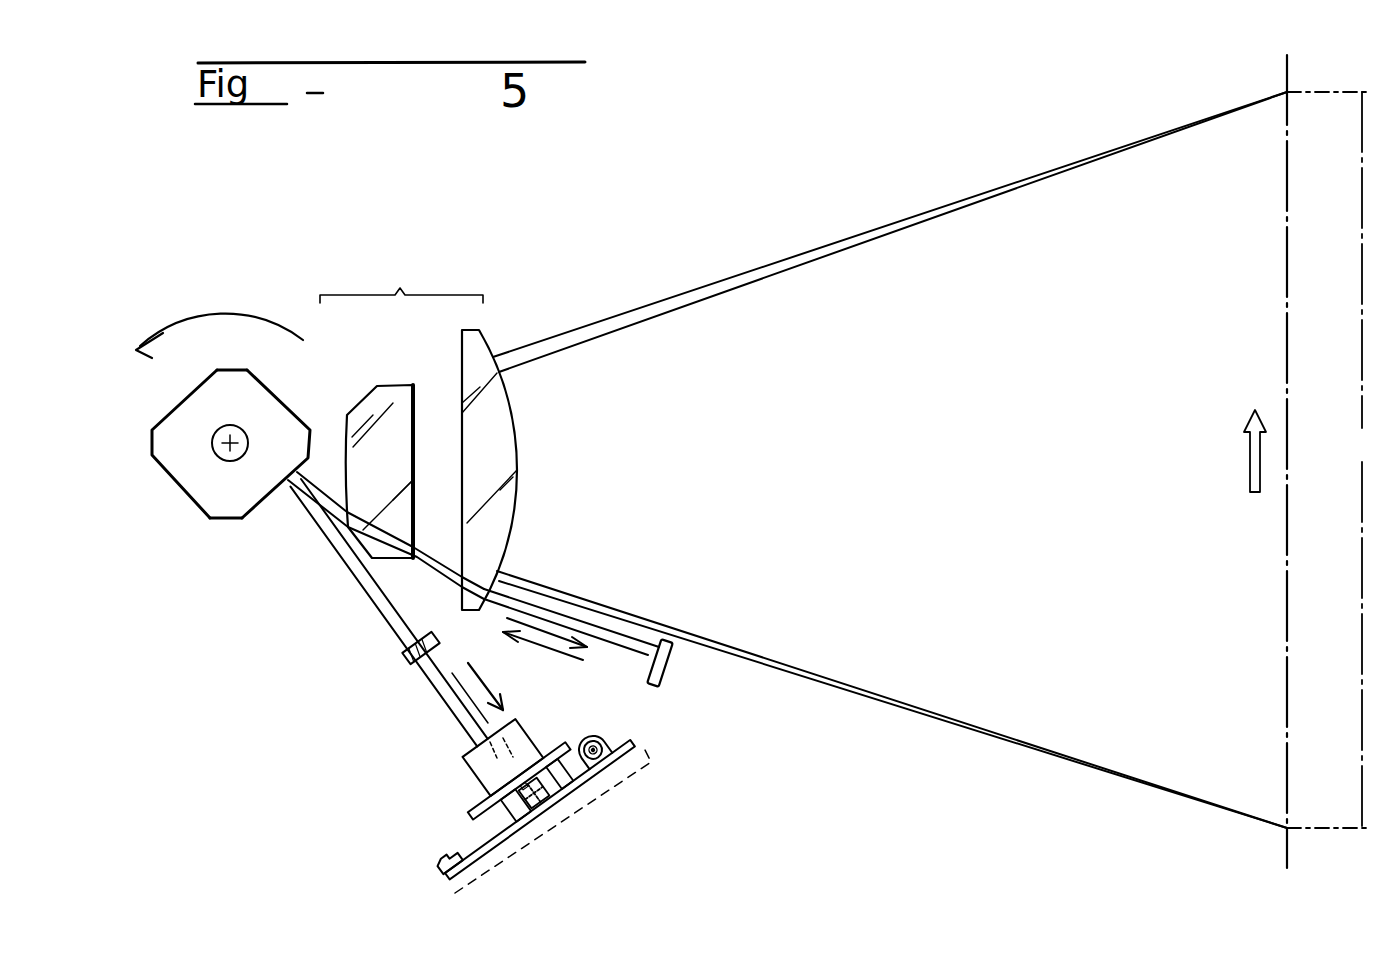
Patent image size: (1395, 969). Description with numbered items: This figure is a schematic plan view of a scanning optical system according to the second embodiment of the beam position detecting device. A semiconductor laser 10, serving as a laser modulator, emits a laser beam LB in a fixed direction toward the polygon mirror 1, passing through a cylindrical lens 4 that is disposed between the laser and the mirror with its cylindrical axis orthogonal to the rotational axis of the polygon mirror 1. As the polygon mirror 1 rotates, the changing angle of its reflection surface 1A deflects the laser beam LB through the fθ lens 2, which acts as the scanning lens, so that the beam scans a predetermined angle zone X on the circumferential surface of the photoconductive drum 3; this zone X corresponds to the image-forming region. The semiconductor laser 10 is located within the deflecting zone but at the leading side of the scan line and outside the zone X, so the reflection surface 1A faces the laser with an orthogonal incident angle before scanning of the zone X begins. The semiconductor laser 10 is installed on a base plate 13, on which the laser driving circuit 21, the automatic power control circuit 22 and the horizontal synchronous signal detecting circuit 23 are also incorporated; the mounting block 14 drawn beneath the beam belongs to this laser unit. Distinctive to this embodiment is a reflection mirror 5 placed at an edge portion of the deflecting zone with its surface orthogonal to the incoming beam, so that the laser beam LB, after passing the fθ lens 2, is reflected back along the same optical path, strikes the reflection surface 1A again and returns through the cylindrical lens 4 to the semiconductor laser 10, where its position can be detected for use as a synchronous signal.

The polygon mirror 1 is at (155, 437).
The reflection surface 1A is at (201, 381).
The fθ lens 2 is at (418, 421).
The photoconductive drum 3 is at (1287, 240).
The cylindrical lens 4 is at (402, 657).
The reflection mirror 5 is at (663, 683).
The semiconductor laser 10 is at (580, 745).
The base plate 13 is at (483, 847).
The laser light source unit 14 is at (470, 768).
The laser driving circuit 21 is at (513, 848).
The automatic power control circuit 22 is at (533, 791).
The horizontal synchronous signal detecting circuit 23 is at (559, 774).
The laser beam LB is at (373, 597).
The predetermined angle zone X is at (1361, 460).